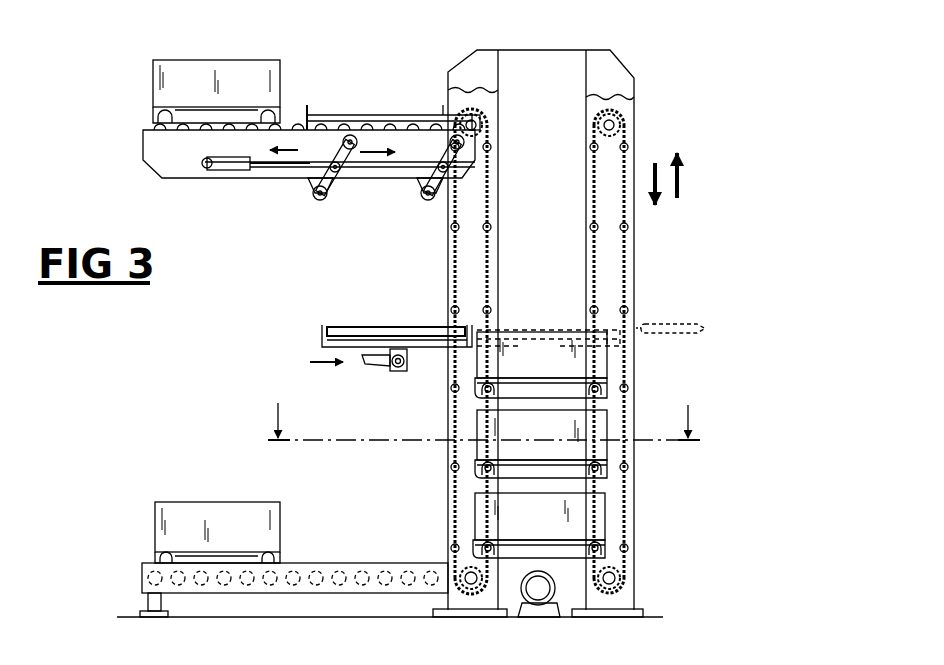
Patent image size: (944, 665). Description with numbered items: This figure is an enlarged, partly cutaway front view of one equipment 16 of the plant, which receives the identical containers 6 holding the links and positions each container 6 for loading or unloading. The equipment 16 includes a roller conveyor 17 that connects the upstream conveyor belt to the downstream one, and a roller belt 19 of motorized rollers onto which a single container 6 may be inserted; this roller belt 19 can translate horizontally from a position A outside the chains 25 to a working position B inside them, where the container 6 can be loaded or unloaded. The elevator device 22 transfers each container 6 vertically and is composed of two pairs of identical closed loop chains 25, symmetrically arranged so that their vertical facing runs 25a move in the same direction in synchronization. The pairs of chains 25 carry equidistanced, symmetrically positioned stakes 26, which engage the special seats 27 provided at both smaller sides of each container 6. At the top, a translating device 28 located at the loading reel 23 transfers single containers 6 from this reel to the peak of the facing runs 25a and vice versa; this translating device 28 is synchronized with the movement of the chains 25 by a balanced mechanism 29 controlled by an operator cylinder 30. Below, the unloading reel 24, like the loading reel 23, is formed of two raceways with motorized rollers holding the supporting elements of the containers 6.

The container 6 is at (147, 88).
The equipment 16 is at (641, 565).
The roller conveyor 17 is at (681, 324).
The roller belt 19 is at (350, 321).
The elevator device 22 is at (496, 122).
The loading reel 23 is at (294, 116).
The unloading reel 24 is at (314, 561).
The closed loop chains 25 is at (623, 585).
The vertical facing runs 25a is at (592, 193).
The stakes 26 is at (600, 307).
The seats 27 is at (601, 472).
The translating device 28 is at (386, 104).
The balanced mechanism 29 is at (372, 170).
The operator cylinder 30 is at (232, 172).